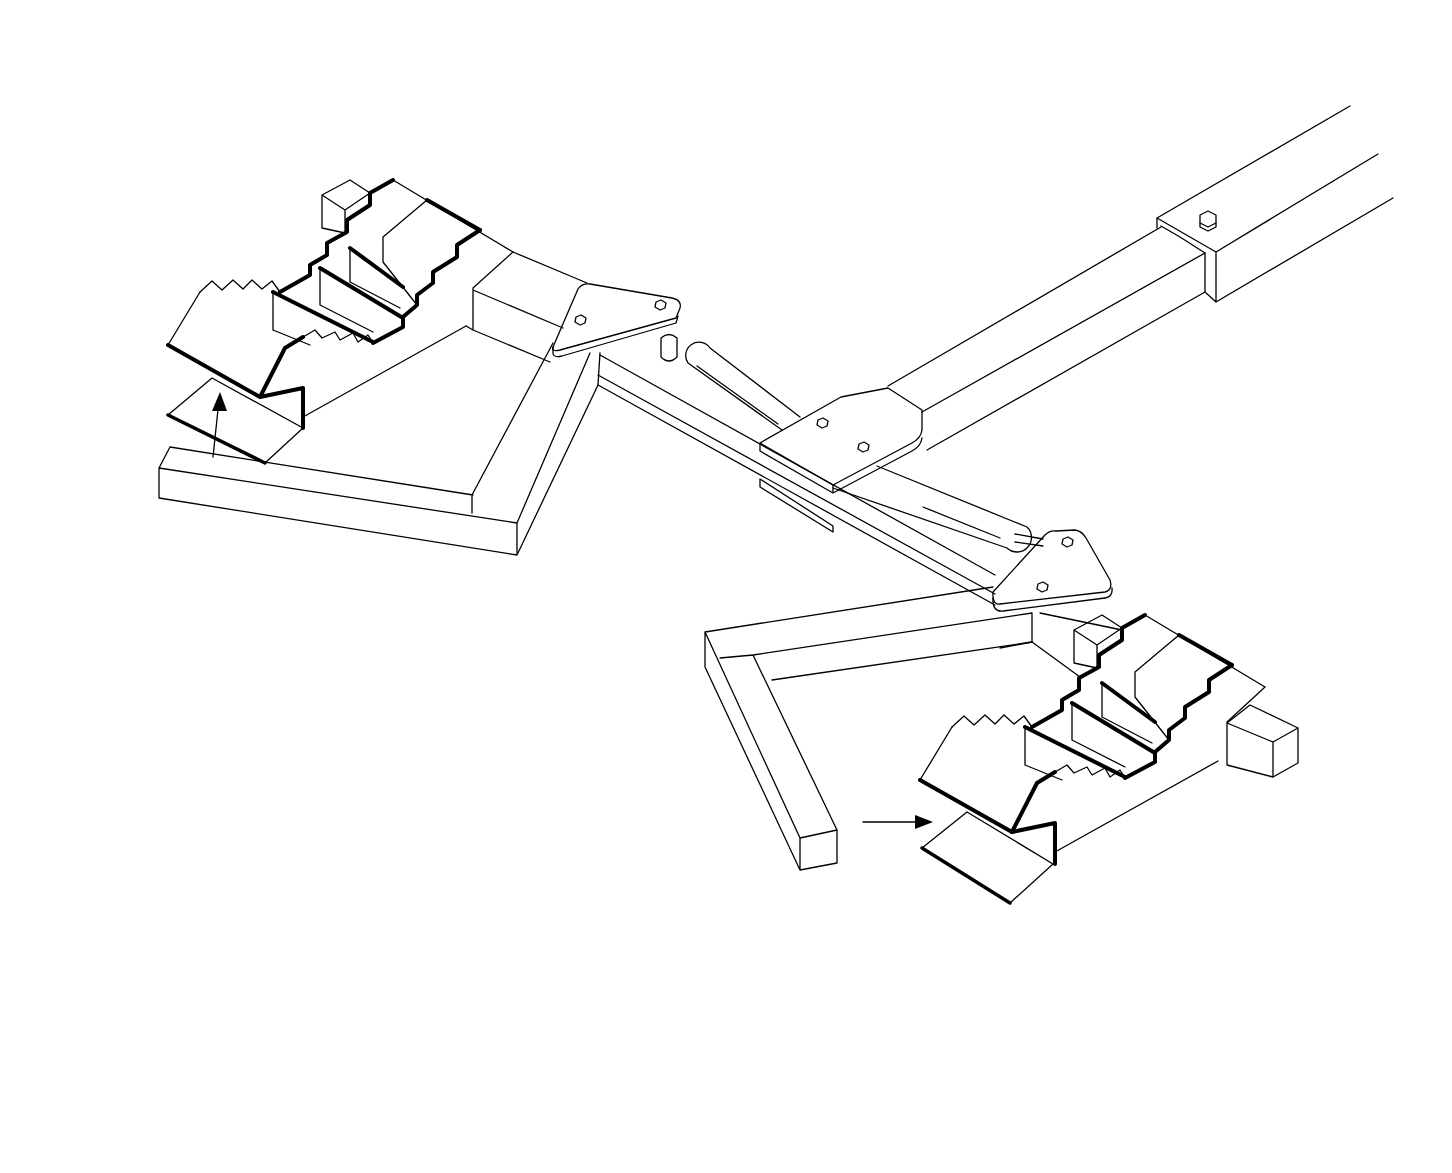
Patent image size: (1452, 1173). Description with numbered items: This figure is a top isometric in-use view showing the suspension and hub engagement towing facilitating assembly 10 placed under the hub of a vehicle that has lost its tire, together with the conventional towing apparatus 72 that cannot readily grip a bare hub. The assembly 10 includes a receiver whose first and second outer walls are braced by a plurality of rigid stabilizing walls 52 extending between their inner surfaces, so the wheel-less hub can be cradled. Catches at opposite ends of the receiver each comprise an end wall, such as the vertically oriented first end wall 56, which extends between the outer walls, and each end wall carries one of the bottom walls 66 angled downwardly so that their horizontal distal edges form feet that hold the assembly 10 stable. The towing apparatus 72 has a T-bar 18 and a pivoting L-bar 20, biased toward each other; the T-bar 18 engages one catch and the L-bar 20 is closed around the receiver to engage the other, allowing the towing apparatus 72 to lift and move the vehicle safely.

The suspension and hub engagement towing facilitating assembly 10 is at (266, 215).
The towing apparatus 72 is at (878, 335).
The stabilizing walls 52 is at (1138, 720).
The T-bar 18 is at (1282, 718).
The L-bar 20 is at (736, 715).
The first end wall 56 is at (1043, 840).
The bottom walls 66 is at (995, 863).